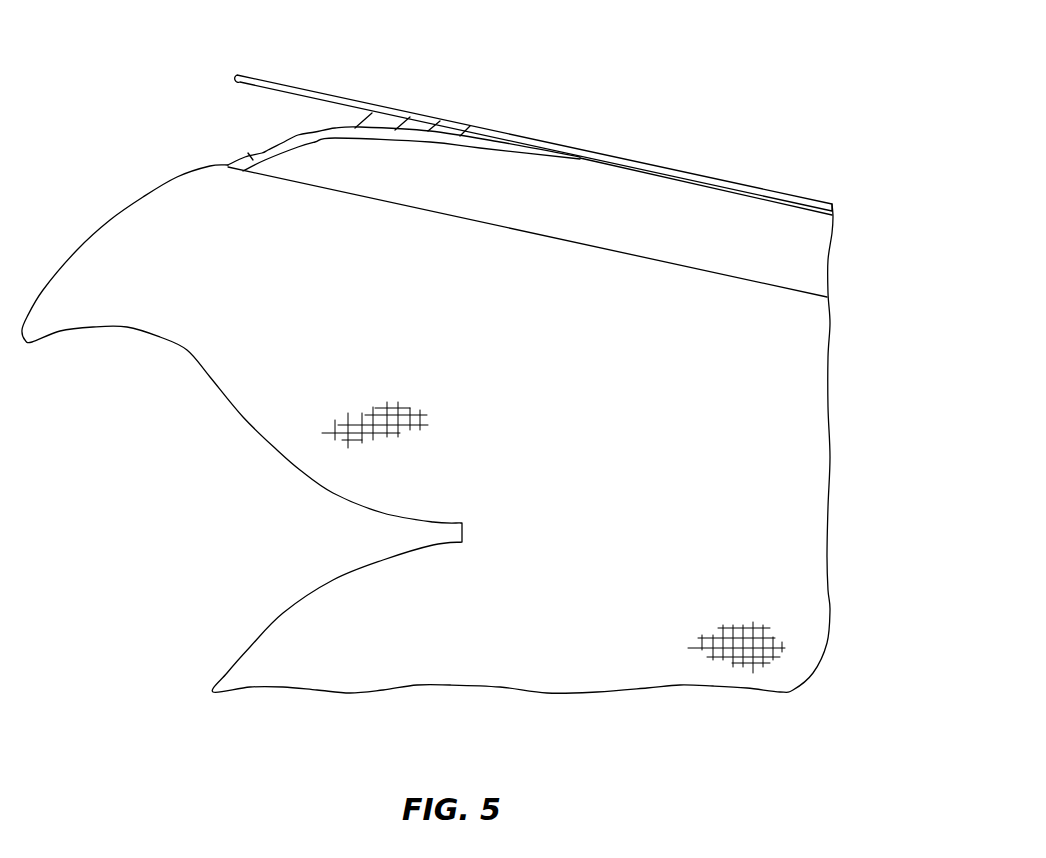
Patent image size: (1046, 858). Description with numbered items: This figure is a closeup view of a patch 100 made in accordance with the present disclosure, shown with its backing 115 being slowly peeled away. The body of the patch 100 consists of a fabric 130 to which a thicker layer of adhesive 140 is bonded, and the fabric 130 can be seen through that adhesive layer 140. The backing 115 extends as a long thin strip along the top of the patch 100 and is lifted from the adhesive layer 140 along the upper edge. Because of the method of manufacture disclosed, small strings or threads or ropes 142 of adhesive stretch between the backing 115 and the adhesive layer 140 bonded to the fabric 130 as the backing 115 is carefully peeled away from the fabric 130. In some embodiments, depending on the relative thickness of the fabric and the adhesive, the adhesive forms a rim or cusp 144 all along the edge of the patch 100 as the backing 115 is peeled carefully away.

The patch 100 is at (767, 443).
The backing 115 is at (728, 183).
The fabric 130 is at (552, 198).
The adhesive layer 140 is at (300, 147).
The strings of adhesive 142 is at (380, 117).
The rim or cusp 144 is at (248, 153).